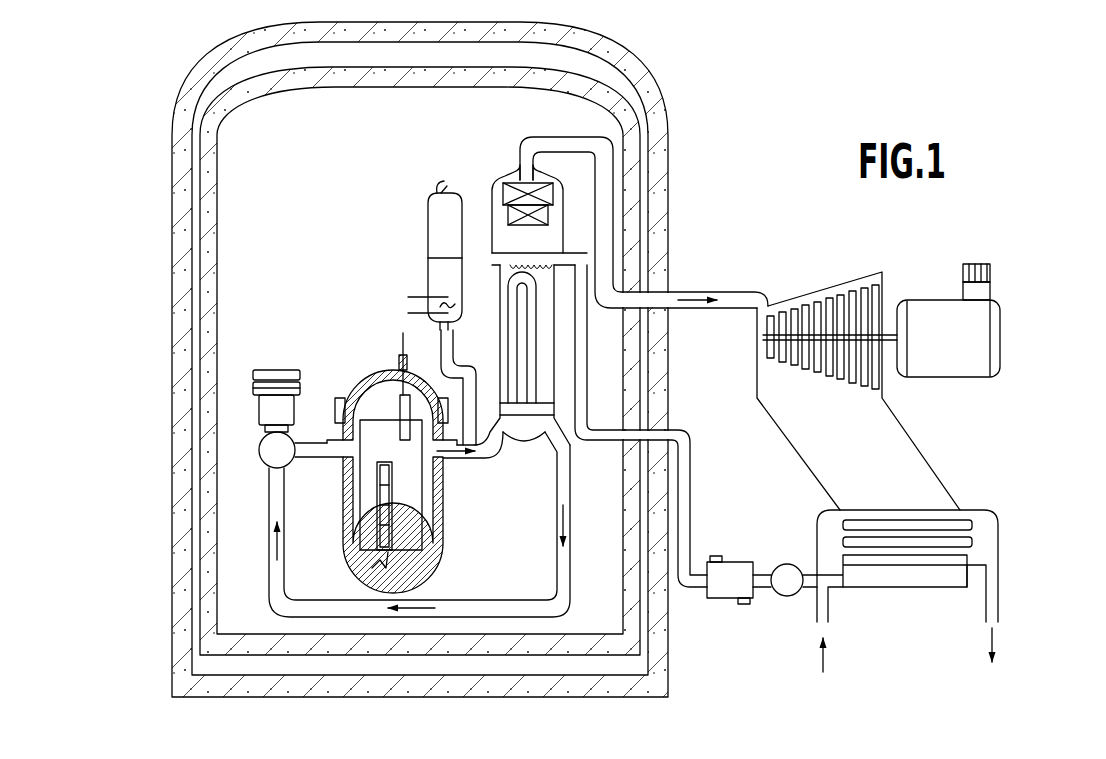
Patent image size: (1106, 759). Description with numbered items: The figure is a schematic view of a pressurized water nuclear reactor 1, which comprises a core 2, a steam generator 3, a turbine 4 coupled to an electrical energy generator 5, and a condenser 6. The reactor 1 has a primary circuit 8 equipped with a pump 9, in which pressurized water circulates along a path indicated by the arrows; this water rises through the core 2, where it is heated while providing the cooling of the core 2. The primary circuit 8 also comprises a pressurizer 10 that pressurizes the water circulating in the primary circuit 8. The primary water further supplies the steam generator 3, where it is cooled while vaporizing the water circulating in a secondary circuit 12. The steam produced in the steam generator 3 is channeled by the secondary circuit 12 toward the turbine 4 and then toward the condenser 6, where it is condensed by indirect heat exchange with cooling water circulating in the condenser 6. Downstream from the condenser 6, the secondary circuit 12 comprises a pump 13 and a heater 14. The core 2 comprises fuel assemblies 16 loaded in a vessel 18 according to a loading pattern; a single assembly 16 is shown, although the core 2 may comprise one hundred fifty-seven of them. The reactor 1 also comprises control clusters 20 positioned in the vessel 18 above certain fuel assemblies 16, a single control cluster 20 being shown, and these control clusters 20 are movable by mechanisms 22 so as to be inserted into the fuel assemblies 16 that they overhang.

The pressurized water nuclear reactor 1 is at (687, 118).
The core 2 is at (441, 486).
The steam generator 3 is at (500, 157).
The turbine 4 is at (850, 274).
The electrical energy generator 5 is at (1010, 345).
The condenser 6 is at (940, 462).
The primary circuit 8 is at (263, 552).
The pump 9 is at (252, 373).
The pressurizer 10 is at (426, 232).
The secondary circuit 12 is at (717, 287).
The pump 13 is at (788, 600).
The heater 14 is at (737, 560).
The fuel assembly 16 is at (374, 510).
The vessel 18 is at (450, 554).
The control cluster 20 is at (414, 406).
The mechanism 22 is at (394, 360).